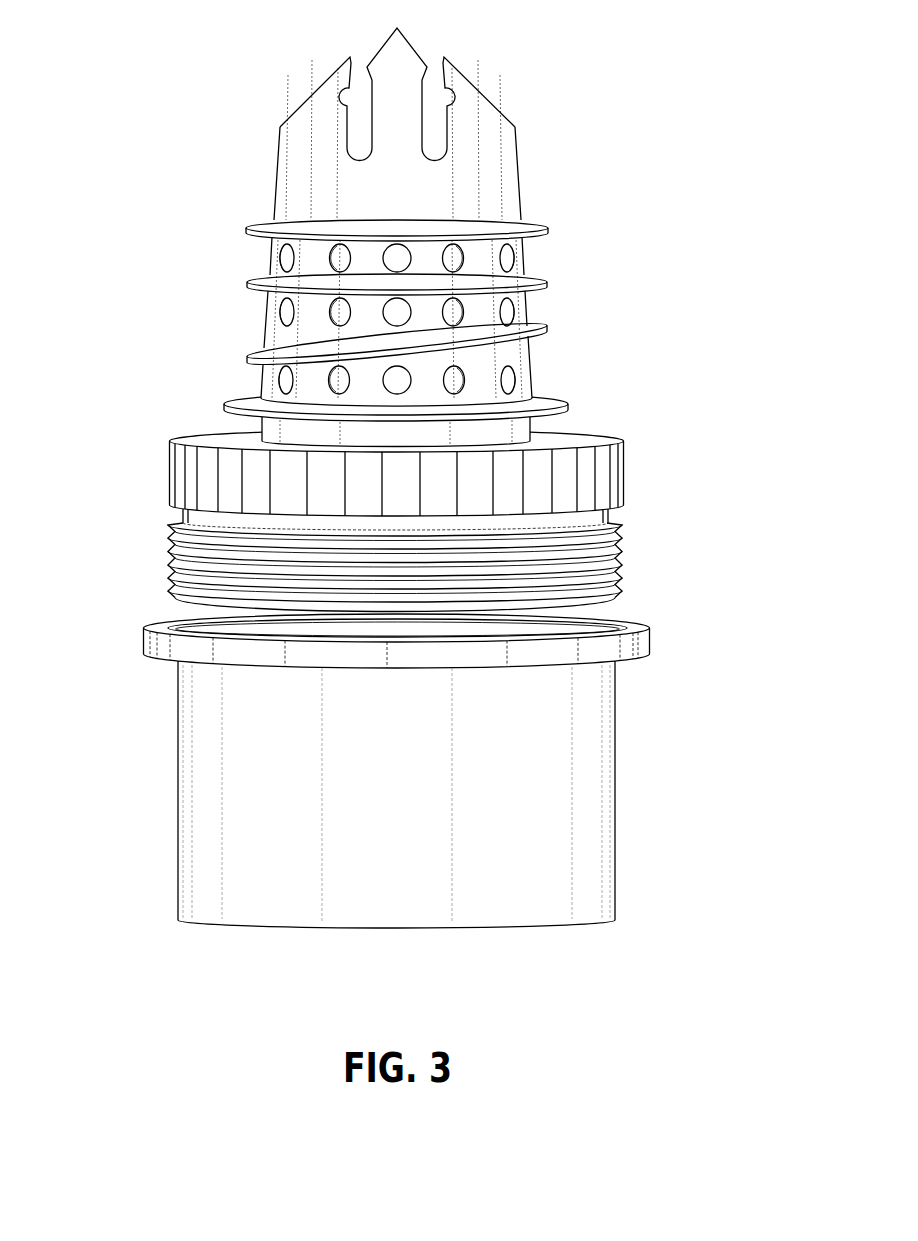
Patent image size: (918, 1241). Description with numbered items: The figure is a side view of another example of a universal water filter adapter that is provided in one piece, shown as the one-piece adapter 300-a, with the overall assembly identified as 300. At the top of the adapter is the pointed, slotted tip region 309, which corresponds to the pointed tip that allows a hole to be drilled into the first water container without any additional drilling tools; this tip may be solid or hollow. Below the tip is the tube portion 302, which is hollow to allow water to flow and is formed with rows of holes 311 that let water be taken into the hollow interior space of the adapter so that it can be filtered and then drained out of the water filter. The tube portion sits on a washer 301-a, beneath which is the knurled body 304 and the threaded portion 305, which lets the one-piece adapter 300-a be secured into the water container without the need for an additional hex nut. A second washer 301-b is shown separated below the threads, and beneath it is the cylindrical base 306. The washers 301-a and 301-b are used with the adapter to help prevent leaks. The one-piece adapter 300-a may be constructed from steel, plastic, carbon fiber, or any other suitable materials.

The bottle cap assembly 300 is at (133, 41).
The one-piece universal water filter adapter 300-a is at (625, 137).
The slotted spire / nozzle tip 309 is at (312, 88).
The holes 311 is at (514, 378).
The tube portion 302 is at (263, 430).
The washer 301-a is at (563, 403).
The knurled cap body 304 is at (623, 448).
The threaded portion 305 is at (620, 548).
The washer 301-b is at (650, 638).
The lower cylindrical base 306 is at (180, 767).